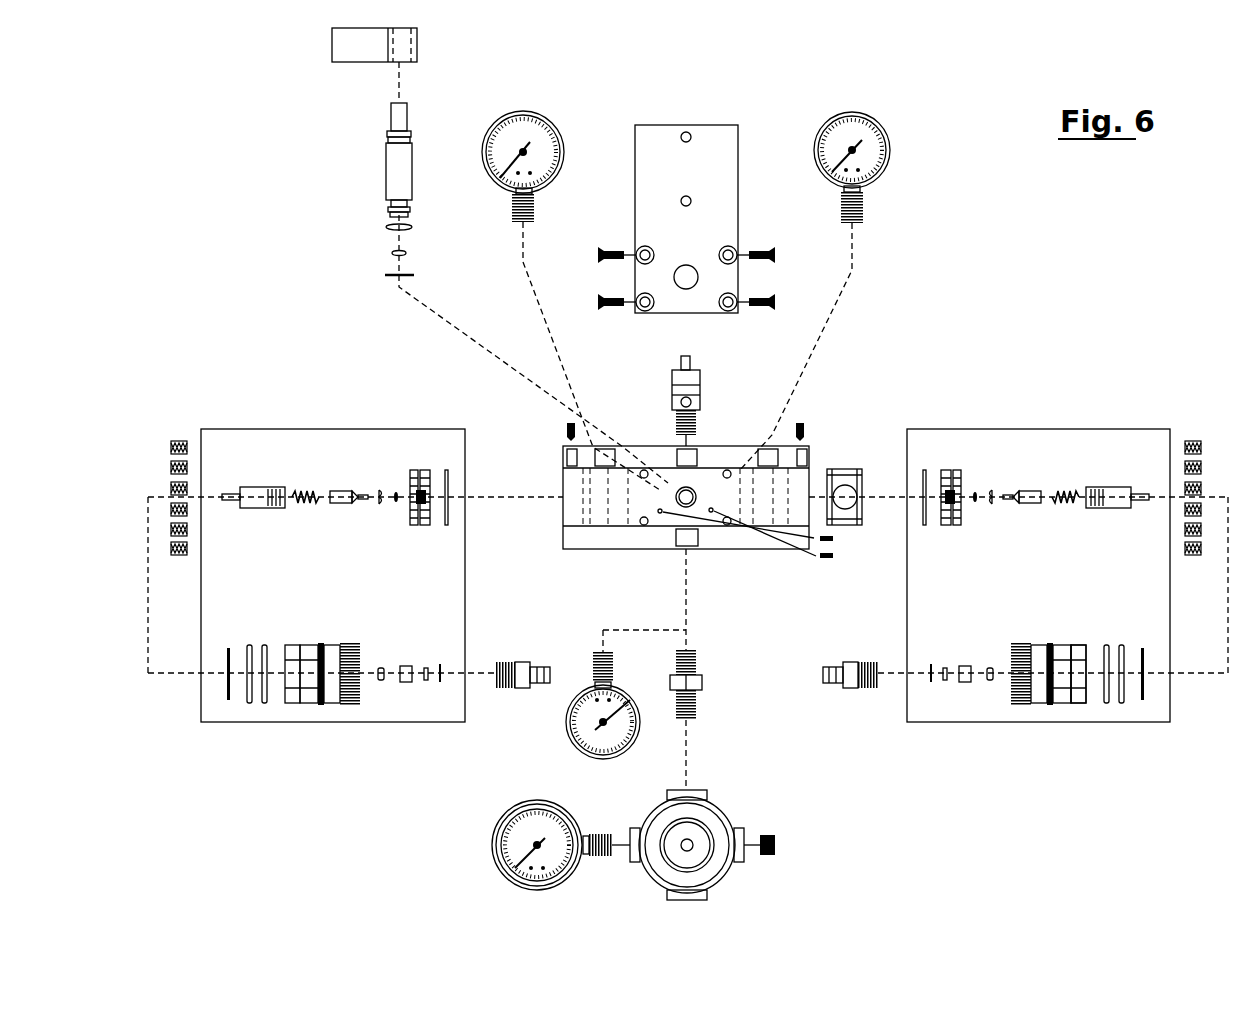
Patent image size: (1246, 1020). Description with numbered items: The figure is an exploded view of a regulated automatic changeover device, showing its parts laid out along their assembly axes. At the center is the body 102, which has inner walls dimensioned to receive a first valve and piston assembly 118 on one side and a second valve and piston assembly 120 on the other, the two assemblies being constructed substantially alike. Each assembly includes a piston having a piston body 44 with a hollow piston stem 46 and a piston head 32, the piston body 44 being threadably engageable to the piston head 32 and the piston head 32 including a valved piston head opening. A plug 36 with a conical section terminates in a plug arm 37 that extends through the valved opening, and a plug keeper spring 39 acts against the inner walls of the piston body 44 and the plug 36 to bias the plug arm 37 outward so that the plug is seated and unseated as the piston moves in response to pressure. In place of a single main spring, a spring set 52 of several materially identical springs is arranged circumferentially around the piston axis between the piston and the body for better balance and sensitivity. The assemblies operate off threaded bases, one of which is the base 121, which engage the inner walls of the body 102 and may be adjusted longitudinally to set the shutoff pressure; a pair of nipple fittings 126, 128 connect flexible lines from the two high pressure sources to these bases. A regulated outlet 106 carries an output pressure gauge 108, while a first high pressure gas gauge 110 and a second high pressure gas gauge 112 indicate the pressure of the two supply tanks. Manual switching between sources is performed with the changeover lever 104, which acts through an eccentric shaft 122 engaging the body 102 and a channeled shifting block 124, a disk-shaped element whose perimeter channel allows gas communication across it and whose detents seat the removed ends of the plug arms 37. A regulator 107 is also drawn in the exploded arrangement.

The piston head 32 is at (418, 527).
The plug 36 is at (344, 488).
The plug arm 37 is at (366, 492).
The plug keeper spring 39 is at (303, 508).
The piston body 44 is at (262, 508).
The piston stem 46 is at (228, 500).
The spring set 52 is at (177, 440).
The body 102 is at (742, 549).
The changeover lever 104 is at (397, 27).
The regulated outlet 106 is at (684, 549).
The regulator 107 is at (718, 893).
The output pressure gauge 108 is at (572, 738).
The first high pressure gas gauge 110 is at (497, 118).
The second high pressure gas gauge 112 is at (858, 112).
The first valve and piston assembly 118 is at (333, 523).
The second valve and piston assembly 120 is at (1033, 429).
The base 121 is at (1063, 697).
The eccentric shaft 122 is at (386, 155).
The channeled shifting block 124 is at (850, 468).
The nipple fitting 126 is at (513, 700).
The nipple fitting 128 is at (308, 697).